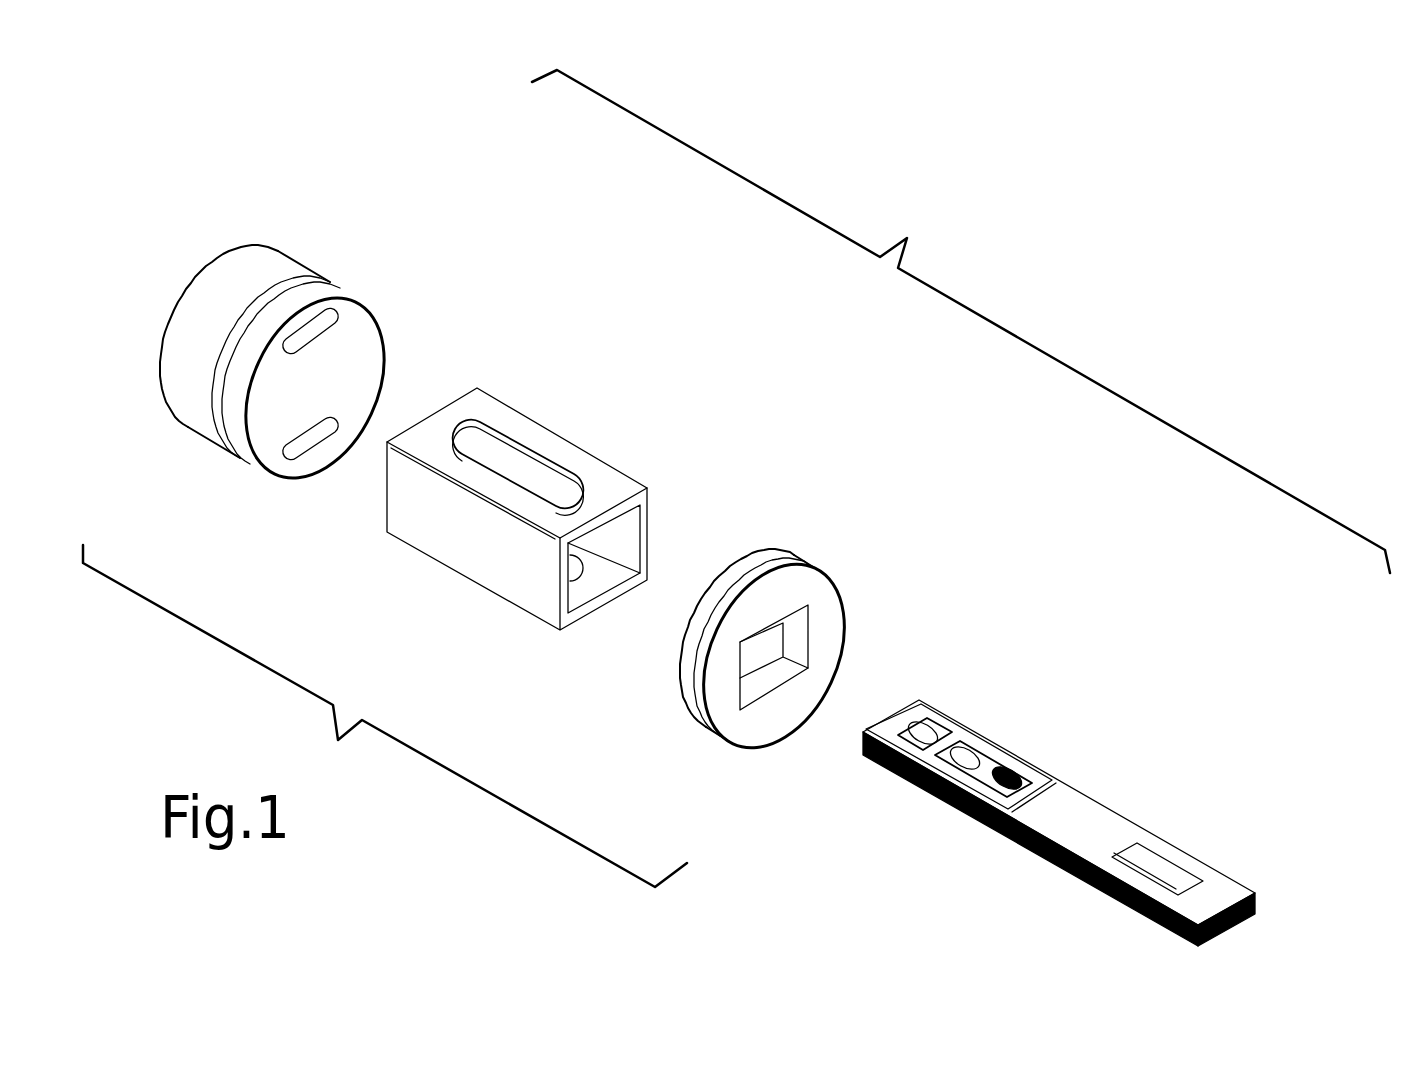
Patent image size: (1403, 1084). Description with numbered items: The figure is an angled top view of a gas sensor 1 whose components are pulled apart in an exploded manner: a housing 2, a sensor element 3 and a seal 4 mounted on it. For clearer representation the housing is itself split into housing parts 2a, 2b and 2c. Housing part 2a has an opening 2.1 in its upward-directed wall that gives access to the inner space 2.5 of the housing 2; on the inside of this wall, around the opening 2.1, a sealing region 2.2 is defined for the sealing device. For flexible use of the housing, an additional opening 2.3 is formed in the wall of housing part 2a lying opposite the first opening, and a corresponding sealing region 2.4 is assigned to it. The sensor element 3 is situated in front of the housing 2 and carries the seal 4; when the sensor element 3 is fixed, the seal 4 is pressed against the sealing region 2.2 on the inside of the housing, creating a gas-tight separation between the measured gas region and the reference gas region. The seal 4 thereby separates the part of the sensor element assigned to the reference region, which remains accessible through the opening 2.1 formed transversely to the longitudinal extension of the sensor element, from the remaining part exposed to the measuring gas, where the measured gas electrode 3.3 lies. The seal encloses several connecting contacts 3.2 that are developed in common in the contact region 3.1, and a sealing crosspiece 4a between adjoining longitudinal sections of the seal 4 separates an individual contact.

The gas sensor 1 is at (943, 222).
The housing 2 is at (385, 716).
The housing part 2a is at (500, 600).
The housing part 2b is at (205, 457).
The housing part 2c is at (698, 730).
The opening 2.1 is at (485, 423).
The sealing region 2.2 is at (525, 485).
The opening 2.3 is at (590, 560).
The sealing region 2.4 is at (590, 577).
The inner space 2.5 is at (647, 507).
The sensor element 3 is at (1103, 820).
The contact region 3.1 is at (1018, 773).
The connecting contact 3.2 is at (927, 728).
The measured gas electrode 3.3 is at (1175, 873).
The seal 4 is at (1046, 771).
The sealing crosspiece 4a is at (945, 733).